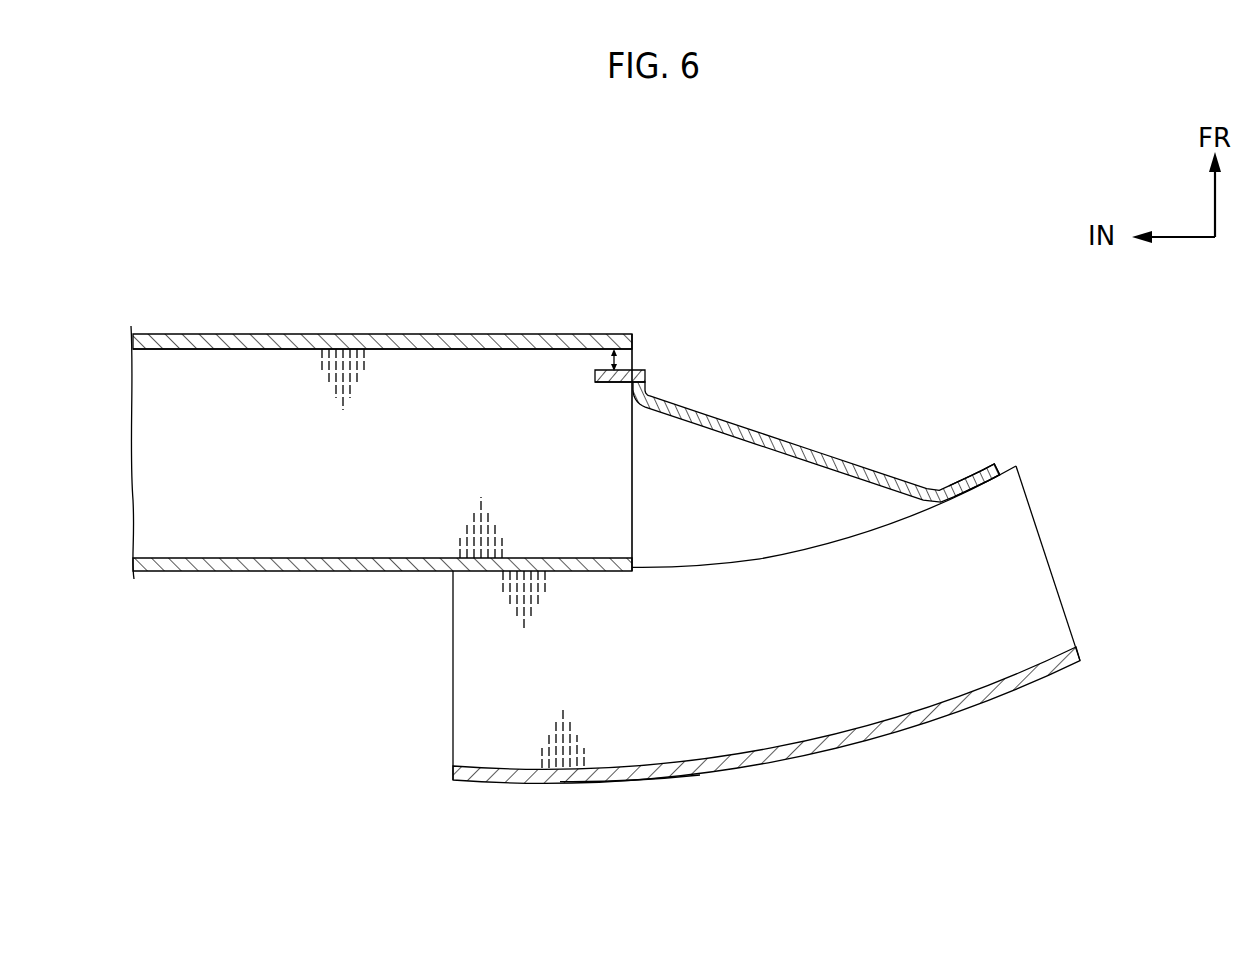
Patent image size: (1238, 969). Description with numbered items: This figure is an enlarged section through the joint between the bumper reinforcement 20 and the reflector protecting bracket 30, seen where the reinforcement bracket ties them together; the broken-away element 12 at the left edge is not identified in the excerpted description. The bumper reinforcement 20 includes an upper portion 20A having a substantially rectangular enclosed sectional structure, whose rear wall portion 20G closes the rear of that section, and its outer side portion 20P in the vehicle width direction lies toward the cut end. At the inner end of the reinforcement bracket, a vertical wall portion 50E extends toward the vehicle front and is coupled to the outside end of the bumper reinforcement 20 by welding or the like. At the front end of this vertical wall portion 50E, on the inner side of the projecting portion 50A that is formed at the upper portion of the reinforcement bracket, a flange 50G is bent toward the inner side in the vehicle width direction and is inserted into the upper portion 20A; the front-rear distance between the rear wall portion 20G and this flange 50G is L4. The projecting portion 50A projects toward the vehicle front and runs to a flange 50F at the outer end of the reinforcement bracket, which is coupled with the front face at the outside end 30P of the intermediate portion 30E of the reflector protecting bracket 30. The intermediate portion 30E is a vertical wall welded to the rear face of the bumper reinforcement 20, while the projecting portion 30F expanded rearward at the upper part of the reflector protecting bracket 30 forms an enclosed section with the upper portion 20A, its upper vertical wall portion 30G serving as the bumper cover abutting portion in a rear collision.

The vehicle body structure 12 is at (177, 328).
The bumper reinforcement 20 is at (237, 330).
The upper portion 20A is at (375, 330).
The outer side portion 20P is at (580, 330).
The rear wall portion 20G is at (506, 352).
The distance L4 is at (609, 360).
The vertical wall portion 50E is at (647, 387).
The flange 50G is at (612, 388).
The projecting portion 50A is at (782, 462).
The flange 50F is at (966, 472).
The reflector protecting bracket 30 is at (716, 782).
The intermediate portion 30E is at (705, 565).
The outside end 30P is at (872, 525).
The projecting portion 30F is at (572, 783).
The upper vertical wall portion 30G is at (617, 783).